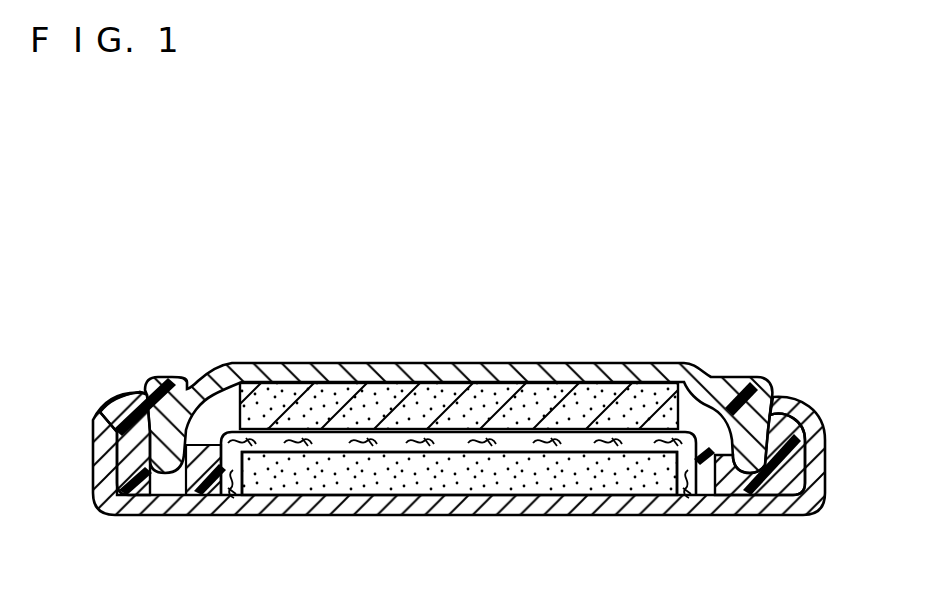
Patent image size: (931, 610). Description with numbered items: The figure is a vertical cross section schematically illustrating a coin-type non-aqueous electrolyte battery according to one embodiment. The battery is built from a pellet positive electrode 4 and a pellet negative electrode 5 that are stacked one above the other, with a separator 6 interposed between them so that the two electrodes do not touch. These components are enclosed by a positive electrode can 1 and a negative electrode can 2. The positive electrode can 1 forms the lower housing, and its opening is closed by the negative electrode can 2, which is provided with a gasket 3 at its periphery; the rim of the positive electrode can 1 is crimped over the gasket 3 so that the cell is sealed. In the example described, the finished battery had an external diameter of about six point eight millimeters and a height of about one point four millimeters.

The positive electrode can 1 is at (805, 433).
The negative electrode can 2 is at (323, 377).
The gasket 3 is at (755, 396).
The pellet positive electrode 4 is at (442, 472).
The pellet negative electrode 5 is at (392, 408).
The separator 6 is at (478, 447).